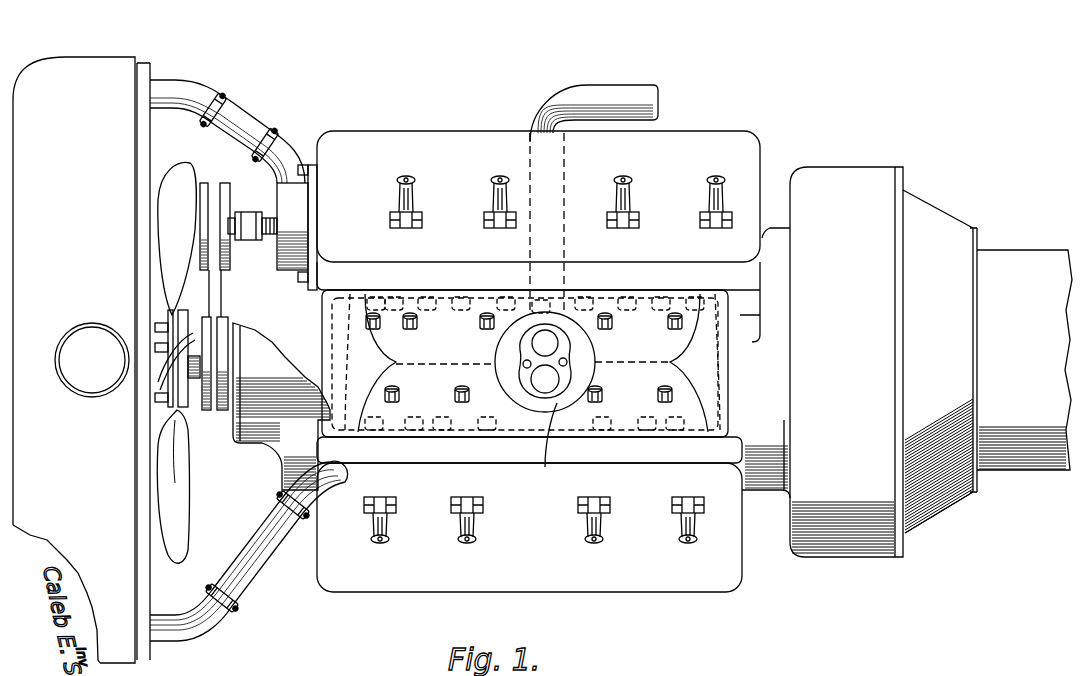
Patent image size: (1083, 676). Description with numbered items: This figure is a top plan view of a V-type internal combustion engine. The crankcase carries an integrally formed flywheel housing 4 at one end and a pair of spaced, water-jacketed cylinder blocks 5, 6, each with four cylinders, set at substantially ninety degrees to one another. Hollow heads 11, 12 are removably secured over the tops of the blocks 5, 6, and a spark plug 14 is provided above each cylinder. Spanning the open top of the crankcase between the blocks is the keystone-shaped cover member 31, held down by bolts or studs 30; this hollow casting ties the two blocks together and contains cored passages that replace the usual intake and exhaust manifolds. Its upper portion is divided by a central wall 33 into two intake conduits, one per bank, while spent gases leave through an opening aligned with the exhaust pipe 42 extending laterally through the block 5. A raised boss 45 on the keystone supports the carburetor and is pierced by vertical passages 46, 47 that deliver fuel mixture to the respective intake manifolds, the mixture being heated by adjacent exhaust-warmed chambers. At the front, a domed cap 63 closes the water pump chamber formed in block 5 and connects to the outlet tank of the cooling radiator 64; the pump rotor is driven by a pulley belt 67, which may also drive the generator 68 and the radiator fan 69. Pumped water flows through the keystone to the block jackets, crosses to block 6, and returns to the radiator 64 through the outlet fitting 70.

The flywheel housing 4 is at (850, 535).
The cylinder block 5 is at (748, 300).
The cylinder block 6 is at (737, 412).
The hollow head 11 is at (707, 140).
The hollow head 12 is at (720, 568).
The spark plug 14 is at (490, 183).
The bolts or studs 30 is at (676, 331).
The cover member 31 is at (720, 358).
The central wall 33 is at (530, 362).
The exhaust pipe 42 is at (562, 103).
The raised boss 45 is at (547, 445).
The vertical passage 46 is at (545, 343).
The vertical passage 47 is at (545, 379).
The removable cover or domed cap 63 is at (287, 254).
The cooling radiator 64 is at (105, 73).
The pulley belt 67 is at (218, 287).
The generator 68 is at (278, 403).
The radiator fan 69 is at (180, 483).
The outlet fitting 70 is at (331, 506).